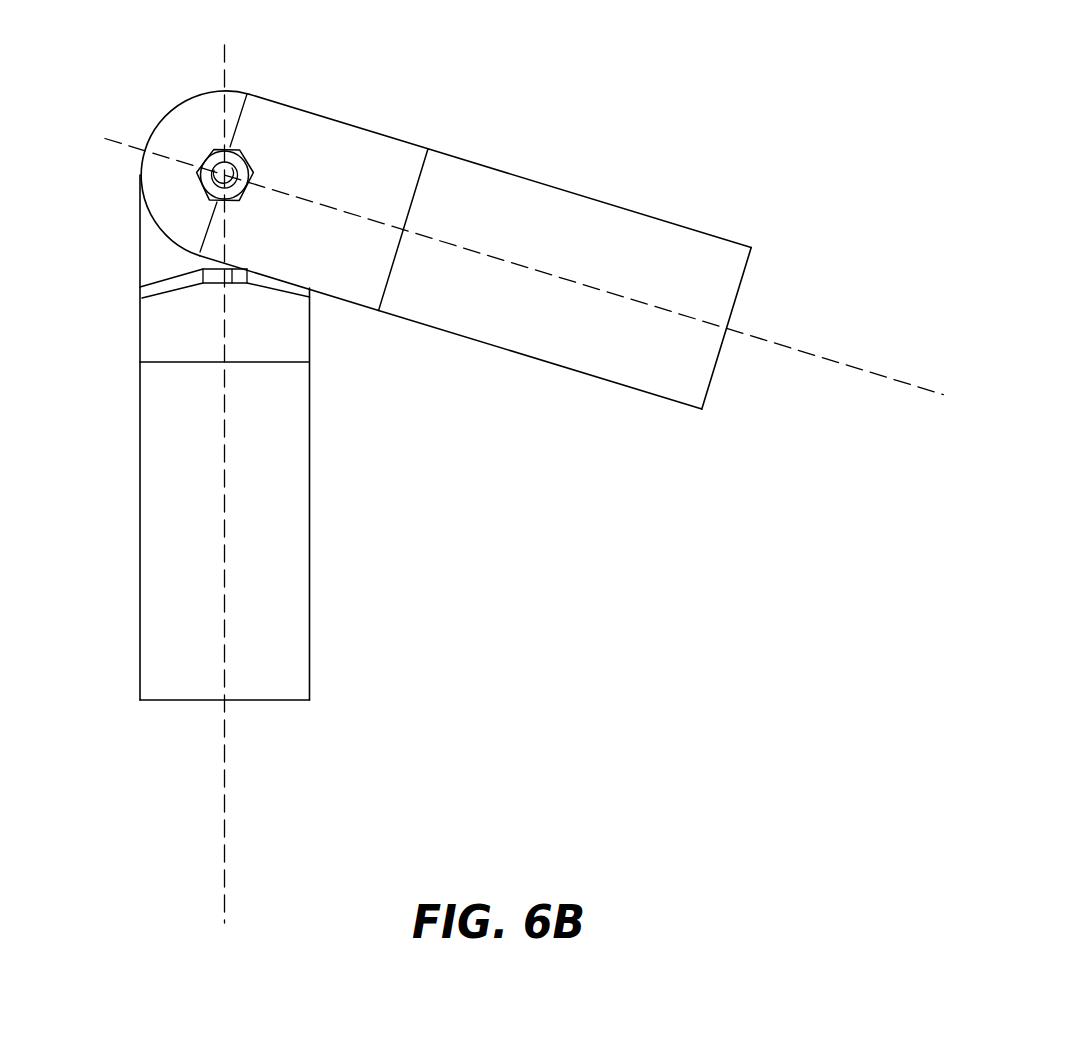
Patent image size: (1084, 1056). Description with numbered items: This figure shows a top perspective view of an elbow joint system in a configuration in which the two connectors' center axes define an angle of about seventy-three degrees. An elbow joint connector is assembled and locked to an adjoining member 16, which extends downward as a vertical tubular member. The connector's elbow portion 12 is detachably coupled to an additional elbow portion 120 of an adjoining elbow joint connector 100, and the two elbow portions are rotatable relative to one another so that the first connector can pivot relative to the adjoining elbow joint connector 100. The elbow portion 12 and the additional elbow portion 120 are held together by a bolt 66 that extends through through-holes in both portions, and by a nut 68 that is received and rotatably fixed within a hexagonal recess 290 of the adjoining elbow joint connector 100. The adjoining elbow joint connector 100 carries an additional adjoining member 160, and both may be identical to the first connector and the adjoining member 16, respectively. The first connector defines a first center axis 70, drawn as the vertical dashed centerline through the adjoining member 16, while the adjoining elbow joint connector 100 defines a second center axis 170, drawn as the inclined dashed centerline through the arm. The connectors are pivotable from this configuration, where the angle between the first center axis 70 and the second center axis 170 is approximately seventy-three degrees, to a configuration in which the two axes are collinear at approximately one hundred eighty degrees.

The elbow portion 12 is at (158, 265).
The adjoining member 16 is at (290, 600).
The bolt 66 is at (218, 165).
The nut 68 is at (228, 147).
The first center axis 70 is at (225, 830).
The adjoining elbow joint connector 100 is at (370, 160).
The additional elbow portion 120 is at (208, 100).
The additional adjoining member 160 is at (623, 238).
The second center axis 170 is at (842, 363).
The hexagonal recess 290 is at (200, 182).